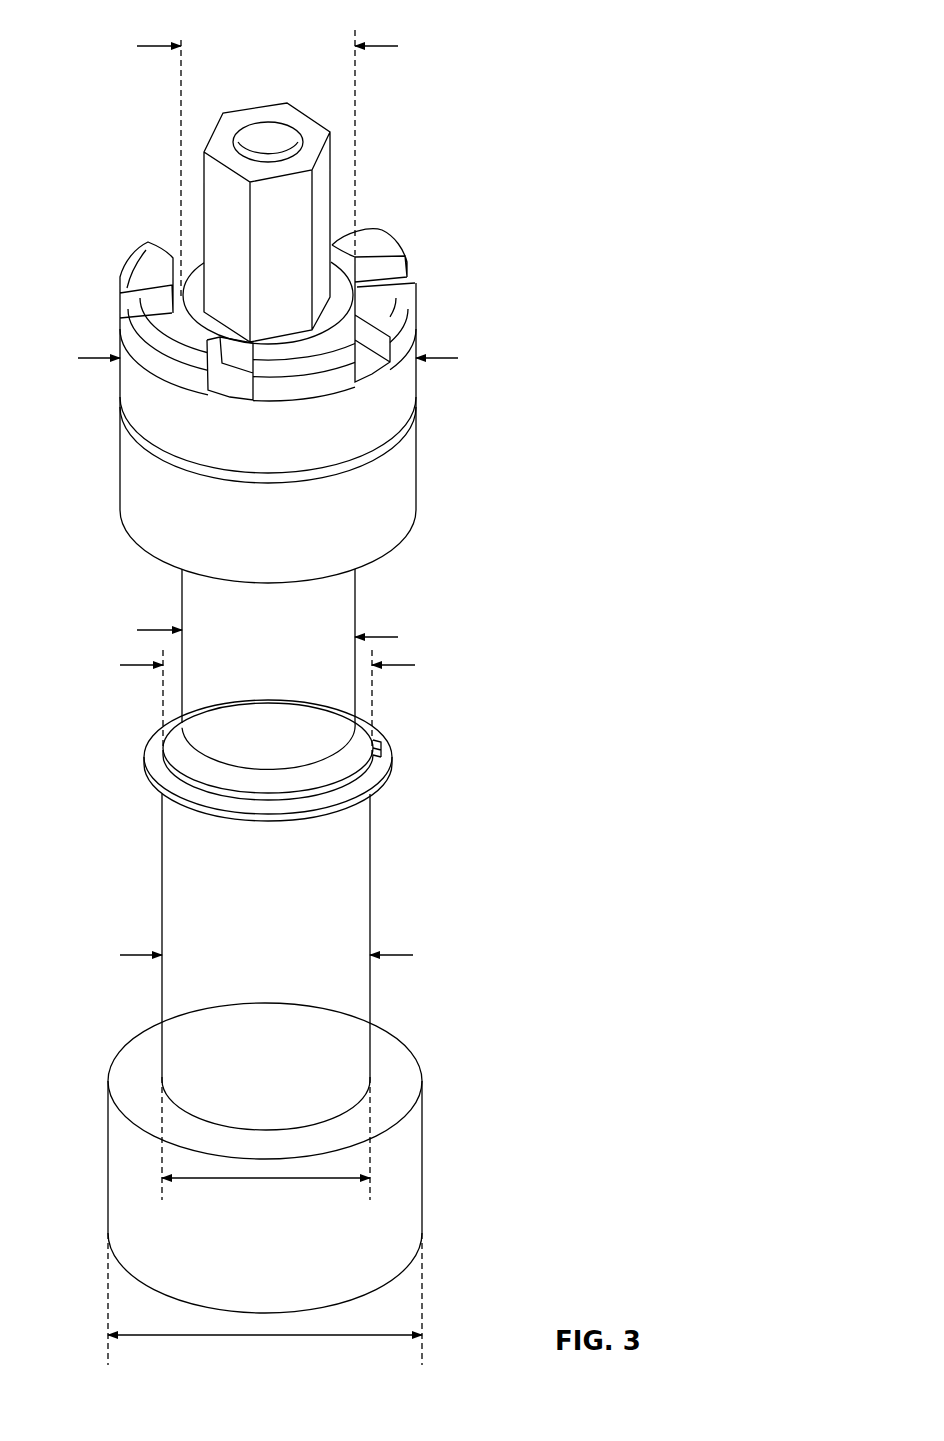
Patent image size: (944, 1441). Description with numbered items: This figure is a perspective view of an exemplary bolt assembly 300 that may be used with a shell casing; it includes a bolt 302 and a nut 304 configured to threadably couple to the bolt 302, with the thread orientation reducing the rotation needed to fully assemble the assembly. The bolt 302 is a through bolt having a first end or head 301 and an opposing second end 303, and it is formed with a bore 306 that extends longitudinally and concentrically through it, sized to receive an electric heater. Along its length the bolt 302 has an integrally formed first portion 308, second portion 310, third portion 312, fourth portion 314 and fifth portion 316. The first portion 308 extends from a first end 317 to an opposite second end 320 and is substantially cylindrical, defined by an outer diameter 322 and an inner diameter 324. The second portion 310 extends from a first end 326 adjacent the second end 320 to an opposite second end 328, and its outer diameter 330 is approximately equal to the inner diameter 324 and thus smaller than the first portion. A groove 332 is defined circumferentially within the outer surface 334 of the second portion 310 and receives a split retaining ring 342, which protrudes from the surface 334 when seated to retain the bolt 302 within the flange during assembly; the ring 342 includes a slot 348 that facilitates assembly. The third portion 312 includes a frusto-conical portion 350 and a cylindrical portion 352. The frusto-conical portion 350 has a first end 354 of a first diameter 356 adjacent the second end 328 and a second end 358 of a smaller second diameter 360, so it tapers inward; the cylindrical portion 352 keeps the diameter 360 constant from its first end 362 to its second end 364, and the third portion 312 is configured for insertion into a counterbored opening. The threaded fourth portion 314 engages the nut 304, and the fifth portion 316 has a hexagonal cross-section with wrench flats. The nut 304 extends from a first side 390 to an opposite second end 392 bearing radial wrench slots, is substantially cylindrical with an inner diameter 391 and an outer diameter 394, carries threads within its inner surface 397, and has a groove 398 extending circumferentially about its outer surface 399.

The bolt assembly 300 is at (572, 301).
The head 301 is at (436, 1261).
The bolt 302 is at (557, 894).
The second end 303 is at (299, 101).
The nut 304 is at (435, 327).
The bore 306 is at (268, 140).
The first portion 308 is at (436, 1161).
The second portion 310 is at (399, 892).
The third portion 312 is at (396, 587).
The fourth portion 314 is at (432, 452).
The fifth portion 316 is at (364, 148).
The first end 317 is at (402, 1290).
The second end 320 is at (400, 1045).
The outer diameter 322 is at (267, 1336).
The inner diameter 324 is at (267, 1180).
The first end 326 is at (343, 1103).
The second end 328 is at (162, 790).
The outer diameter 330 is at (398, 955).
The groove 332 is at (365, 810).
The outer surface 334 is at (165, 914).
The retaining ring 342 is at (394, 781).
The slot 348 is at (374, 740).
The frusto-conical portion 350 is at (165, 724).
The cylindrical portion 352 is at (183, 611).
The first end 354 is at (172, 733).
The first diameter 356 is at (398, 665).
The second end 358 is at (236, 770).
The second diameter 360 is at (387, 637).
The first end 362 is at (215, 765).
The second end 364 is at (332, 586).
The first side 390 is at (128, 545).
The inner diameter 391 is at (373, 46).
The second end 392 is at (150, 268).
The outer diameter 394 is at (447, 358).
The inner surface 397 is at (345, 262).
The groove 398 is at (135, 390).
The outer surface 399 is at (400, 508).